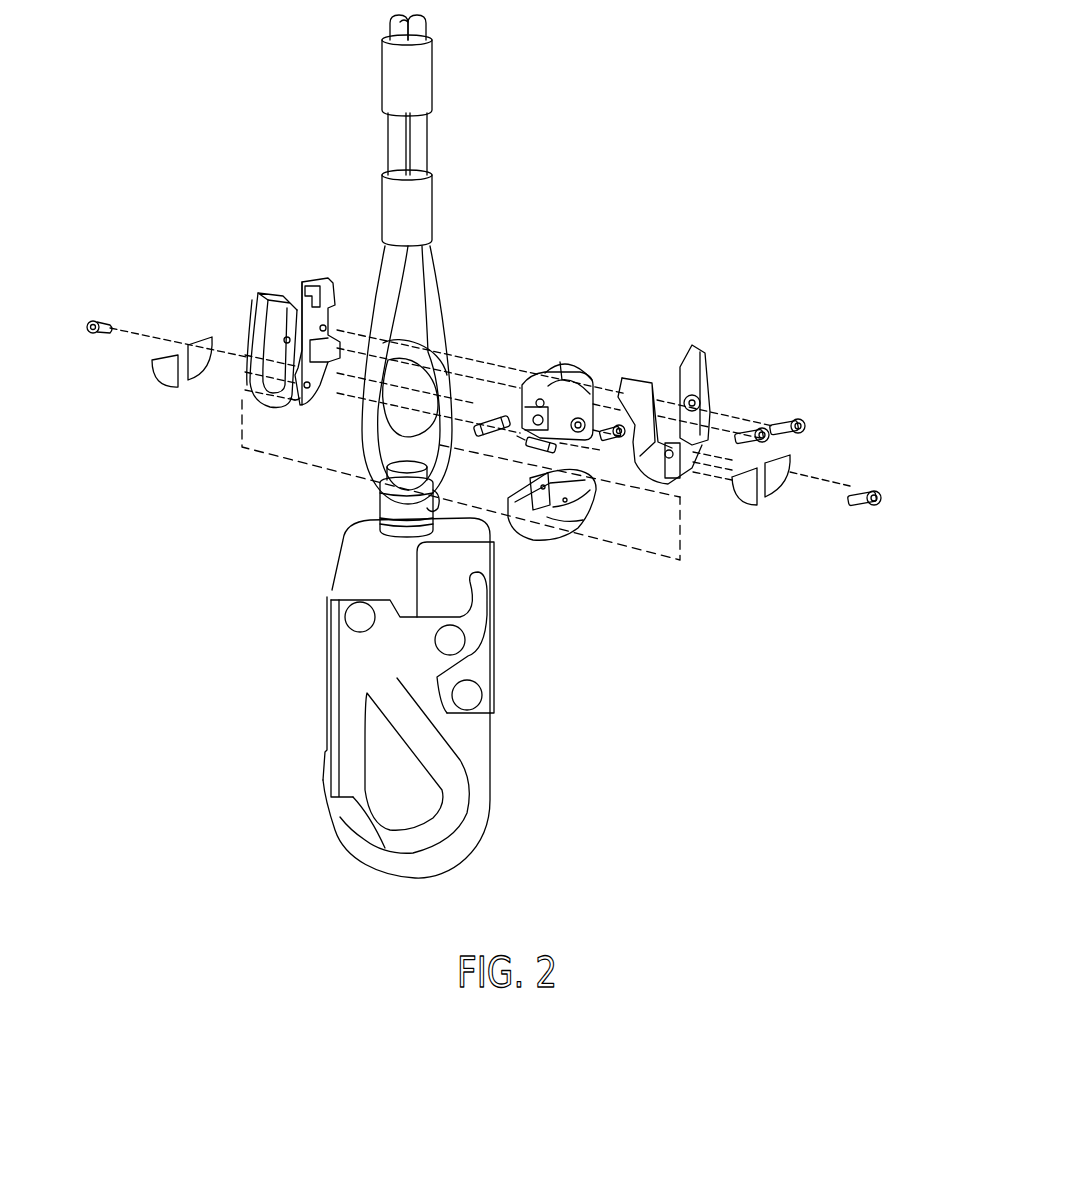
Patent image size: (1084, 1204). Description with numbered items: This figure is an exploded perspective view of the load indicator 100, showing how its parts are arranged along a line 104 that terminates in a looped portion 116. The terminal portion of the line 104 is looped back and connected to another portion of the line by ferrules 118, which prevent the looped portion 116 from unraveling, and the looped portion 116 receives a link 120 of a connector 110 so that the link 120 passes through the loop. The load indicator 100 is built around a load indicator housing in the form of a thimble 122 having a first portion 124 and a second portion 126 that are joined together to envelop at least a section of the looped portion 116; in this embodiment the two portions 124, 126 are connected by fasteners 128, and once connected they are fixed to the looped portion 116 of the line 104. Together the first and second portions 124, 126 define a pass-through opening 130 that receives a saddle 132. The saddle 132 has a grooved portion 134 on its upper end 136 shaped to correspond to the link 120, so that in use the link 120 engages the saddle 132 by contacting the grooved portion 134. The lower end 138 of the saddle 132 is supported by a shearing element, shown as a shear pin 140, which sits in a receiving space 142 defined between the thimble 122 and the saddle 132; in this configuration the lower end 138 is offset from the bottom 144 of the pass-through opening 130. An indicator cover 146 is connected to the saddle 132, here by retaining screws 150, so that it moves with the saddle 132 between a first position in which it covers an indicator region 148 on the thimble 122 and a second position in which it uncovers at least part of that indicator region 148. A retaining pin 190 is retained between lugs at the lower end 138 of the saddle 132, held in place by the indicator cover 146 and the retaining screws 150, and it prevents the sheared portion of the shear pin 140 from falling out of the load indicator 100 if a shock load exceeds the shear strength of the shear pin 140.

The load indicator 100 is at (658, 296).
The line 104 is at (427, 143).
The connector 110 is at (478, 662).
The looped portion 116 is at (430, 287).
The ferrule 118 is at (417, 78).
The link 120 is at (362, 462).
The thimble 122 is at (622, 558).
The first portion 124 is at (253, 303).
The second portion 126 is at (688, 382).
The fastener 128 is at (757, 418).
The pass-through opening 130 is at (295, 280).
The saddle 132 is at (535, 382).
The grooved portion 134 is at (578, 380).
The upper end 136 is at (594, 368).
The lower end 138 is at (517, 442).
The shear pin 140 is at (488, 410).
The receiving space 142 is at (323, 332).
The bottom 144 is at (288, 400).
The indicator cover 146 is at (540, 530).
The indicator region 148 is at (742, 490).
The retaining screw 150 is at (618, 442).
The retaining pin 190 is at (558, 452).